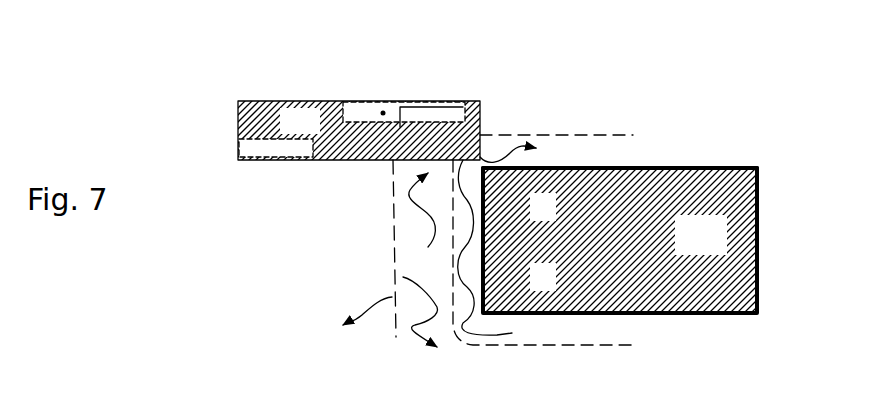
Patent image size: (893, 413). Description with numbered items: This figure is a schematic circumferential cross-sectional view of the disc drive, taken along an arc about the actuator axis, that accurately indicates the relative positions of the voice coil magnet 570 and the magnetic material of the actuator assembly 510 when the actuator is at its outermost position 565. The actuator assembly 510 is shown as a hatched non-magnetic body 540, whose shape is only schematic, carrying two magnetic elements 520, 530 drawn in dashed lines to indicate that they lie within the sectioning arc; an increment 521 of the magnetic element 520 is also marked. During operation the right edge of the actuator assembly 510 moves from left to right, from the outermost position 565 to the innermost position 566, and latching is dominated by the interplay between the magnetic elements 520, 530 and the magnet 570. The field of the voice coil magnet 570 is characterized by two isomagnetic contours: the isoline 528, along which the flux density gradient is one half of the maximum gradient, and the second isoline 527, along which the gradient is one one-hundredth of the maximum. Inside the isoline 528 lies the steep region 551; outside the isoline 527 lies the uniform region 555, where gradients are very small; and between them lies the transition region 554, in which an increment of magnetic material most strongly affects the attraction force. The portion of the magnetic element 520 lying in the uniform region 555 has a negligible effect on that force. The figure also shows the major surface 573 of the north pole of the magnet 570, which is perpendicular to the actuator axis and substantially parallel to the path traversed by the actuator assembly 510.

The actuator assembly 510 is at (281, 132).
The magnetic element 520 is at (347, 107).
The increment 521 is at (385, 106).
The second isoline 527 is at (392, 228).
The isoline 528 is at (625, 347).
The magnetic element 530 is at (243, 143).
The non-magnetic body 540 is at (262, 102).
The steep region 551 is at (606, 329).
The transition region 554 is at (418, 260).
The uniform region 555 is at (356, 326).
The outermost position 565 is at (480, 99).
The innermost position 566 is at (673, 97).
The voice coil magnet 570 is at (682, 246).
The major surface 573 is at (698, 165).